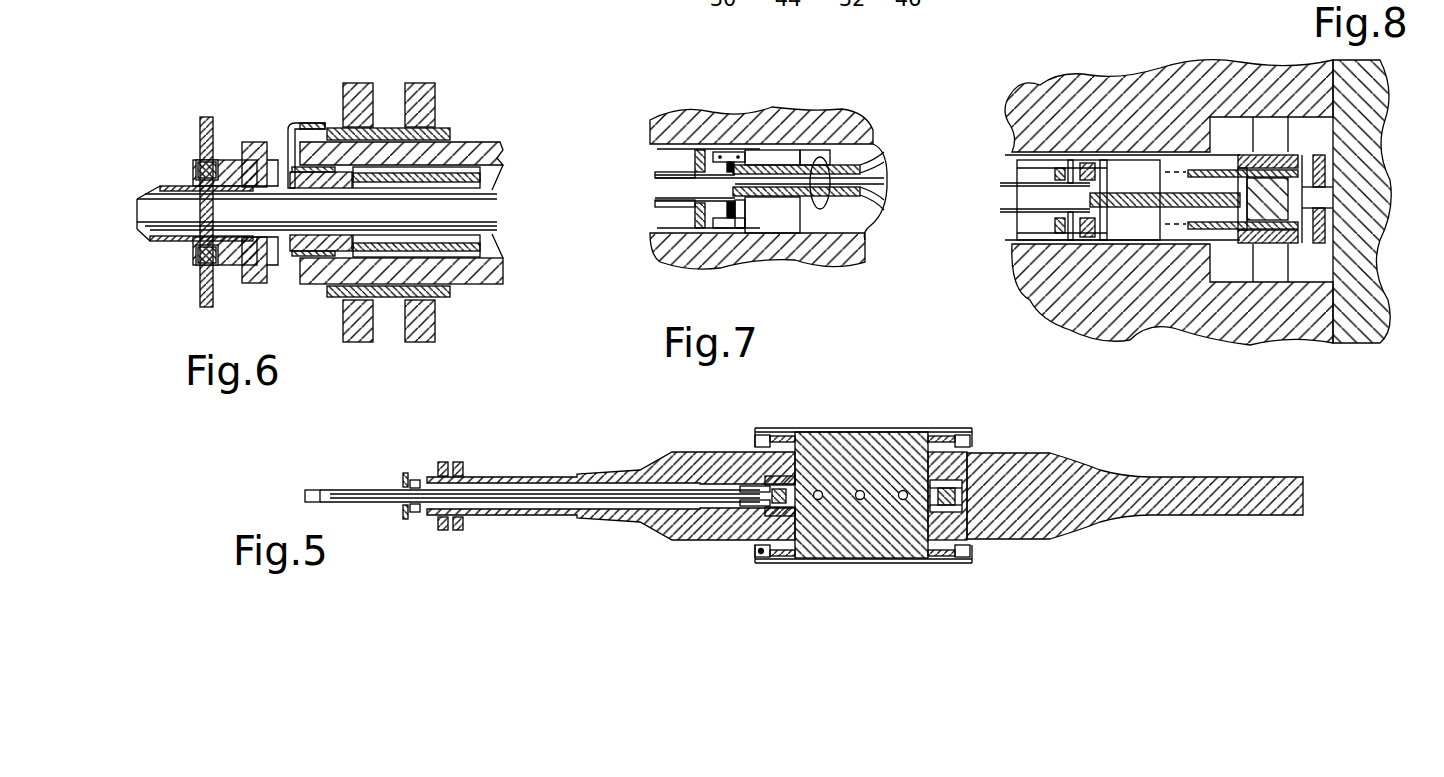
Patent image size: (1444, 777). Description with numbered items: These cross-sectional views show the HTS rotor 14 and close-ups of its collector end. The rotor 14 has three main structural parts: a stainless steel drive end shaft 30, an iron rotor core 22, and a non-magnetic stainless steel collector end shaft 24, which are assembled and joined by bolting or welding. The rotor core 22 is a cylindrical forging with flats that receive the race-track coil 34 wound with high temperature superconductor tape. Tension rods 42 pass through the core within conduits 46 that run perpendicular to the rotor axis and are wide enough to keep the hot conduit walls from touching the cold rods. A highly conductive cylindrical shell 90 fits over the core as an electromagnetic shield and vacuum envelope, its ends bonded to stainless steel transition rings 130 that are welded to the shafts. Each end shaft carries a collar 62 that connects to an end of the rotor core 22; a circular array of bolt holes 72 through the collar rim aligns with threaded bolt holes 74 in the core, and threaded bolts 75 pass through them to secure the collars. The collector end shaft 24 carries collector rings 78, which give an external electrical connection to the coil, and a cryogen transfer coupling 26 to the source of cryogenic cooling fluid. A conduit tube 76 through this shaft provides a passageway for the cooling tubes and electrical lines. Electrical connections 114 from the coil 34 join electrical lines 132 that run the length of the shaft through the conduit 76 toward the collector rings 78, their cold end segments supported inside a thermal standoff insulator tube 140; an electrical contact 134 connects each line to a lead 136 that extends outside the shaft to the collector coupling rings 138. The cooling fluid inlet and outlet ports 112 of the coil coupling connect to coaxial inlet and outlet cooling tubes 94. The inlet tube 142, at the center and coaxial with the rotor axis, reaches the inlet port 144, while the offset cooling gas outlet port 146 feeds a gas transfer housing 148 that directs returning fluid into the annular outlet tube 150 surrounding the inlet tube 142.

In FIG. 5, the rotor 14 is at (680, 566).
In FIG. 8, the rotor core 22 is at (1365, 108).
In FIG. 5, the rotor core 22 is at (816, 490).
In FIG. 6, the collector end shaft 24 is at (485, 152).
In FIG. 7, the collector end shaft 24 is at (760, 118).
In FIG. 8, the collector end shaft 24 is at (1160, 82).
In FIG. 5, the collector end shaft 24 is at (668, 533).
In FIG. 6, the cryogen transfer coupling 26 is at (145, 243).
In FIG. 5, the cryogen transfer coupling 26 is at (390, 505).
In FIG. 5, the drive end shaft 30 is at (1040, 538).
In FIG. 8, the race-track coil 34 is at (1285, 200).
In FIG. 5, the race-track coil 34 is at (950, 494).
In FIG. 5, the tension rod 42 is at (820, 490).
In FIG. 5, the conduit 46 is at (860, 490).
In FIG. 5, the collar 62 is at (758, 546).
In FIG. 5, the bolt holes 72 is at (782, 561).
In FIG. 5, the threaded bolt holes 74 is at (820, 562).
In FIG. 5, the threaded bolts 75 is at (776, 548).
In FIG. 6, the conduit tube 76 is at (503, 266).
In FIG. 7, the conduit tube 76 is at (670, 140).
In FIG. 8, the conduit tube 76 is at (1100, 160).
In FIG. 5, the conduit tube 76 is at (586, 482).
In FIG. 6, the collector rings 78 is at (387, 92).
In FIG. 5, the collector rings 78 is at (452, 531).
In FIG. 5, the cylindrical shell 90 is at (912, 563).
In FIG. 6, the inlet and outlet cooling tubes 94 is at (240, 215).
In FIG. 7, the inlet and outlet cooling tubes 94 is at (676, 190).
In FIG. 8, the inlet and outlet cooling tubes 94 is at (1030, 200).
In FIG. 7, the cooling fluid inlet and outlet ports 112 is at (827, 158).
In FIG. 8, the electrical connections 114 is at (1194, 170).
In FIG. 5, the transition rings 130 is at (755, 428).
In FIG. 6, the electrical lines 132 is at (445, 127).
In FIG. 8, the electrical lines 132 is at (1170, 165).
In FIG. 6, the electrical contact 134 is at (308, 172).
In FIG. 6, the lead 136 is at (291, 150).
In FIG. 6, the collector coupling rings 138 is at (426, 328).
In FIG. 7, the thermal standoff insulator tube 140 is at (718, 152).
In FIG. 6, the inlet tube 142 is at (152, 212).
In FIG. 7, the inlet tube 142 is at (690, 198).
In FIG. 7, the inlet port 144 is at (778, 197).
In FIG. 7, the cooling gas outlet port 146 is at (752, 166).
In FIG. 7, the gas transfer housing 148 is at (733, 218).
In FIG. 6, the outlet tube 150 is at (180, 234).
In FIG. 7, the outlet tube 150 is at (672, 210).